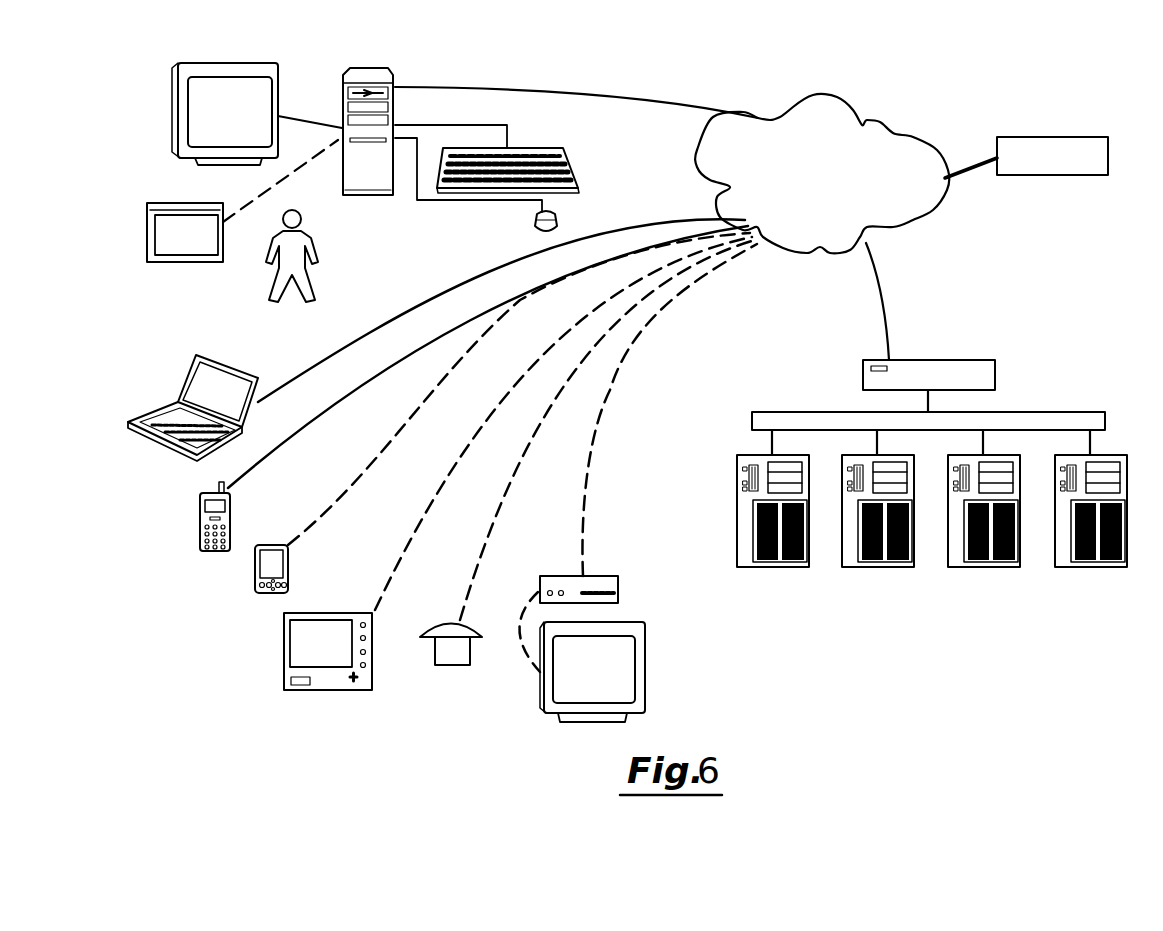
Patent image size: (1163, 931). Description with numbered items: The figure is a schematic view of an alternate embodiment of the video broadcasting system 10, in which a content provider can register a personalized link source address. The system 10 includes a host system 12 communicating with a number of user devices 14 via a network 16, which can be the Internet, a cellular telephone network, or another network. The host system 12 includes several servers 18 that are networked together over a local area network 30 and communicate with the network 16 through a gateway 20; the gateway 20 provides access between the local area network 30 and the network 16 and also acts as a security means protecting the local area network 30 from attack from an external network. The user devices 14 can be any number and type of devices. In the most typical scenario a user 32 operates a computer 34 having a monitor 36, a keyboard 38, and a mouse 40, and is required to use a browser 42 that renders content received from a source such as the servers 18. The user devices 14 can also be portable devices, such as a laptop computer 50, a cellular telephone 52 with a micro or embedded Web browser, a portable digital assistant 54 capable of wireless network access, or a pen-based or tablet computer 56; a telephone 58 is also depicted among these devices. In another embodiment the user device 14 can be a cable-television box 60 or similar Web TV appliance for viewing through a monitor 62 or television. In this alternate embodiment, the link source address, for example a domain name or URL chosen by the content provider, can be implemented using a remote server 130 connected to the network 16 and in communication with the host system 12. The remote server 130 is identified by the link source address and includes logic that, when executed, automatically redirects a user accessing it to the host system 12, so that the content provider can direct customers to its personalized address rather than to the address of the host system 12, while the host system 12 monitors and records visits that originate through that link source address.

The system 10 is at (990, 85).
The host system 12 is at (1033, 323).
The user devices 14 is at (197, 698).
The network 16 is at (838, 94).
The servers 18 is at (1125, 480).
The gateway 20 is at (937, 360).
The local area network 30 is at (1105, 414).
The user 32 is at (308, 270).
The computer 34 is at (340, 95).
The monitor 36 is at (177, 103).
The keyboard 38 is at (550, 148).
The mouse 40 is at (535, 221).
The browser 42 is at (178, 263).
The laptop computer 50 is at (185, 378).
The cellular telephone 52 is at (197, 527).
The portable digital assistant 54 is at (257, 575).
The pen-based or tablet computer 56 is at (282, 665).
The telephone 58 is at (435, 655).
The cable-television box 60 is at (598, 573).
The monitor 62 is at (540, 683).
The remote server 130 is at (1043, 175).